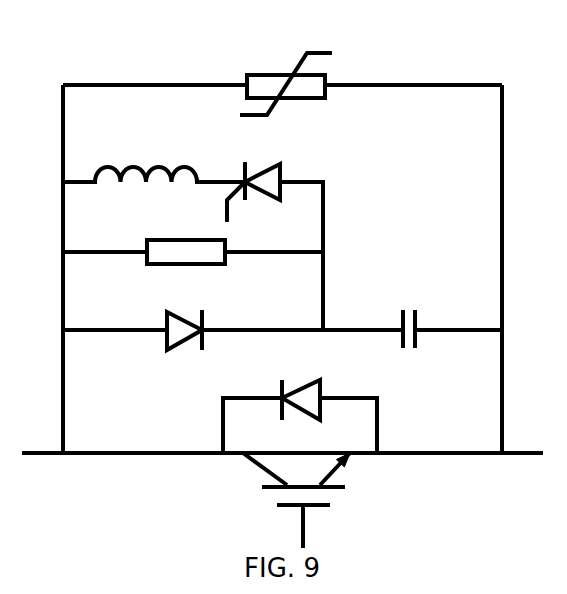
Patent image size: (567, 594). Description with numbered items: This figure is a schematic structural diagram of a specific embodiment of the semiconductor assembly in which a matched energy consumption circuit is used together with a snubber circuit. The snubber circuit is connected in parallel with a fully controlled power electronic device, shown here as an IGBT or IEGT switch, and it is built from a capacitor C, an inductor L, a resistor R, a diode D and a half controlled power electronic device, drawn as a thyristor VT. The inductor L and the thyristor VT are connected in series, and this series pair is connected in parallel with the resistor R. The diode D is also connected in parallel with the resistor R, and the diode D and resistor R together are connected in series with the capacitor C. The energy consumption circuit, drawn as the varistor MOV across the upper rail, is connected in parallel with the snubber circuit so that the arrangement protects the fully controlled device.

The metal oxide varistor MOV is at (286, 71).
The inductor L is at (154, 161).
The thyristor VT is at (275, 234).
The resistor R is at (193, 238).
The diode D is at (233, 318).
The capacitor C is at (452, 317).